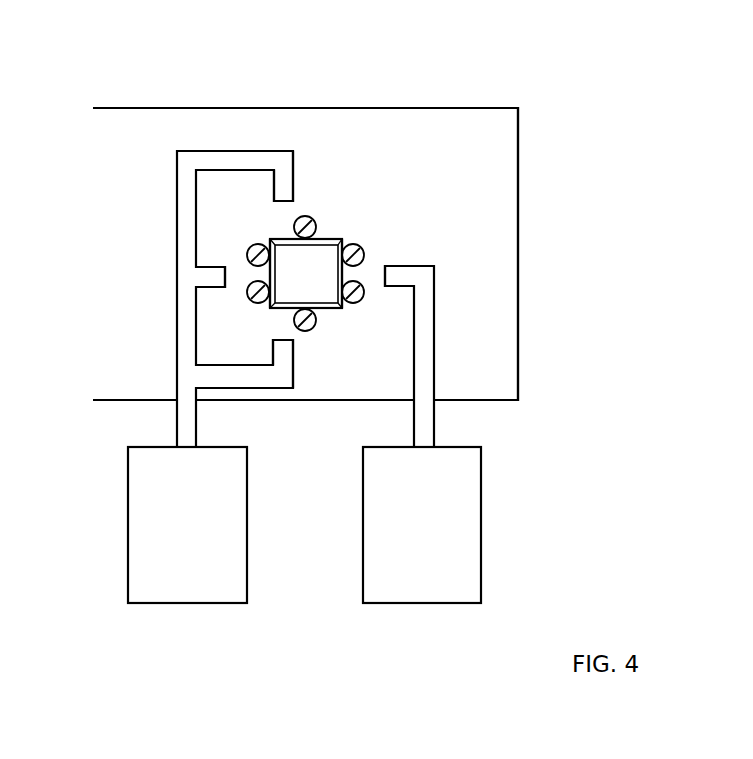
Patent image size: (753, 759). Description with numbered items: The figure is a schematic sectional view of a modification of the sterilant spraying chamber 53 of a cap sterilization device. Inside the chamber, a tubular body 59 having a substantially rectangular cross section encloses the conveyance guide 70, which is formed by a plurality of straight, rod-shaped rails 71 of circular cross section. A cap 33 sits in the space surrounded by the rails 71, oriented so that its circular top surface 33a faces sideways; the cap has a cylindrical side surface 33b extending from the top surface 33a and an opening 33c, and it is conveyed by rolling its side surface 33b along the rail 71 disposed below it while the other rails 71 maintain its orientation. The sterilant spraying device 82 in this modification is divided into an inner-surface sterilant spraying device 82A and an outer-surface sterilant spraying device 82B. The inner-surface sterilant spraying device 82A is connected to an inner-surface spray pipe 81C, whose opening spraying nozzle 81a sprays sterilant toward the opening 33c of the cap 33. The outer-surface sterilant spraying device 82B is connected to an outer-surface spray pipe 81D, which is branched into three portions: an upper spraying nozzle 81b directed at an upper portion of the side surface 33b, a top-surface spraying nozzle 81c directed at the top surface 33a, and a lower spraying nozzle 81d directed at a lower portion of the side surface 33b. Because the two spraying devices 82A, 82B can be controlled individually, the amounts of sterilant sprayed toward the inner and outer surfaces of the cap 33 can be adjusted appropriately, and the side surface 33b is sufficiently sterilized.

The tubular body 59 is at (468, 108).
The sterilant spraying chamber 53 is at (505, 205).
The conveyance guide 70 is at (335, 193).
The rails 71 is at (257, 250).
The cap 33 is at (333, 342).
The top surface 33a is at (270, 268).
The side surface 33b is at (333, 308).
The opening 33c is at (330, 273).
The outer-surface spray pipe 81D is at (141, 301).
The opening spraying nozzle 81a is at (396, 276).
The upper spraying nozzle 81b is at (286, 185).
The top-surface spraying nozzle 81c is at (215, 268).
The lower spraying nozzle 81d is at (282, 352).
The inner-surface spray pipe 81C is at (465, 337).
The sterilant spraying device 82 is at (430, 668).
The inner-surface sterilant spraying device 82A is at (398, 585).
The outer-surface sterilant spraying device 82B is at (215, 585).